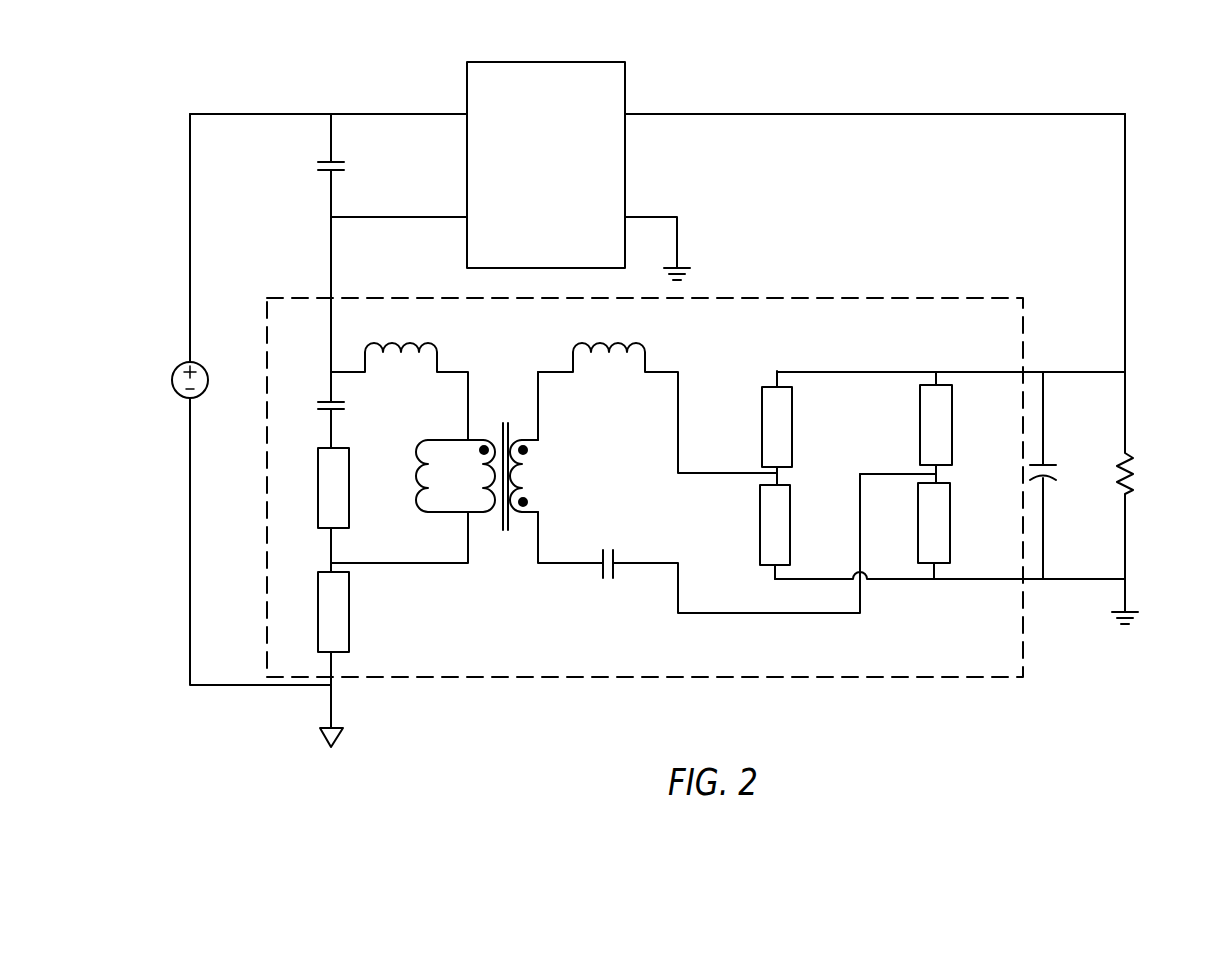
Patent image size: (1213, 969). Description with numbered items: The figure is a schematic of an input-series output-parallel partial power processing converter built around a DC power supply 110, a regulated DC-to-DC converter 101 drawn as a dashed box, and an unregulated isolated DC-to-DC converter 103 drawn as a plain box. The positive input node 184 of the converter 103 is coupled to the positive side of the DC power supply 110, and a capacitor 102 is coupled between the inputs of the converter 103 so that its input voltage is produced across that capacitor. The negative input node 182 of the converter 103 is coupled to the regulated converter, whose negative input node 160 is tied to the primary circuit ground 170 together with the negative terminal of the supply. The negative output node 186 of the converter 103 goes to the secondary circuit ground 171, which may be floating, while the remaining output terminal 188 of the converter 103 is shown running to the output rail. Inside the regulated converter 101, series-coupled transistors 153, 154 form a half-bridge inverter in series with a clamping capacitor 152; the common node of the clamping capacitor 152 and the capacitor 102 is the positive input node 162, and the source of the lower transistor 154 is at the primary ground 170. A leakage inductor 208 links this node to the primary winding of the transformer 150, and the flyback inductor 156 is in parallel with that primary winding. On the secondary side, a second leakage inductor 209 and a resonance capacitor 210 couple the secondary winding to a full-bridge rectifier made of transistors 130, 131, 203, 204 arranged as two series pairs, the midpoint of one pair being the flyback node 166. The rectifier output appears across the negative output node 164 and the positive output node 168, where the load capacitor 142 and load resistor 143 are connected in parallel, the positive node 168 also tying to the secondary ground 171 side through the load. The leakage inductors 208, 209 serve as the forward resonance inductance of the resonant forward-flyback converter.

The regulated DC-to-DC converter 101 is at (693, 678).
The capacitor 102 is at (336, 172).
The isolated DC-to-DC converter 103 is at (624, 62).
The DC power supply 110 is at (180, 368).
The transistor 130 is at (793, 410).
The transistor 131 is at (791, 510).
The capacitor 142 is at (1052, 463).
The resistor 143 is at (1128, 455).
The transformer 150 is at (504, 531).
The clamping capacitor 152 is at (324, 401).
The transistor 153 is at (350, 497).
The transistor 154 is at (366, 637).
The flyback inductor 156 is at (460, 440).
The negative input node 160 is at (334, 665).
The positive input node 162 is at (334, 322).
The negative output node 164 is at (1002, 580).
The flyback node 166 is at (876, 473).
The positive output node 168 is at (993, 371).
The primary circuit ground 170 is at (343, 731).
The secondary circuit ground 171 is at (690, 270).
The negative input node 182 is at (420, 217).
The positive input node 184 is at (420, 113).
The negative output node 186 is at (627, 217).
The controller terminal 188 is at (627, 113).
The transistor 203 is at (953, 402).
The transistor 204 is at (951, 502).
The inductor 208 is at (428, 343).
The inductor 209 is at (642, 343).
The capacitor 210 is at (605, 580).